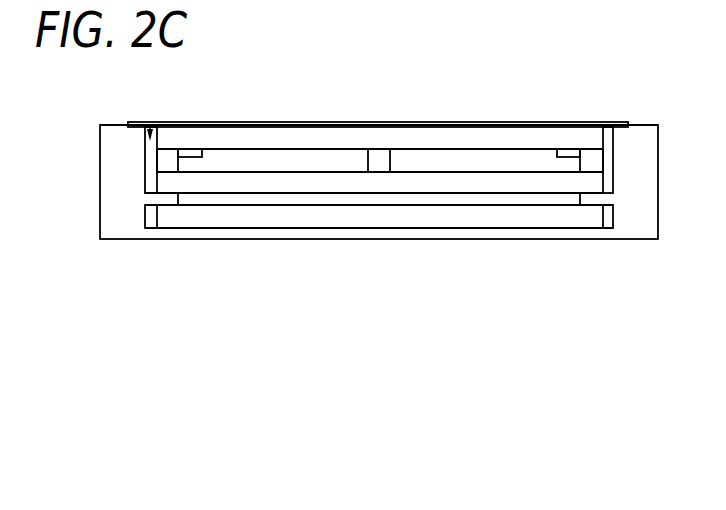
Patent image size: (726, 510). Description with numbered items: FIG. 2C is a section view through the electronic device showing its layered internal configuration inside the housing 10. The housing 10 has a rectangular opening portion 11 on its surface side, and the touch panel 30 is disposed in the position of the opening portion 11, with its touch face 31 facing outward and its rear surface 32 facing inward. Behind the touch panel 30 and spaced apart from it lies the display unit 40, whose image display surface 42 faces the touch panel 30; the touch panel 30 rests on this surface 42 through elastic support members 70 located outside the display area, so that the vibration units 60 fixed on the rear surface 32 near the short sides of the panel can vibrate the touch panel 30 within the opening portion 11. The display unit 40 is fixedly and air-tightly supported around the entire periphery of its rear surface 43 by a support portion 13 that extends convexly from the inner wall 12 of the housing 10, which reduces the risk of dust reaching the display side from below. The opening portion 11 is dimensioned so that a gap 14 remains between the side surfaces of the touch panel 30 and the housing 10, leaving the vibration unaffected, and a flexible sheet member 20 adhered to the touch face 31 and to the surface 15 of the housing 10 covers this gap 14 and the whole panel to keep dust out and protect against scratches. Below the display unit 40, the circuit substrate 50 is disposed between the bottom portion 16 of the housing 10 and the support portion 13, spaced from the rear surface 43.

The housing 10 is at (651, 211).
The opening portion 11 is at (150, 129).
The inner wall 12 is at (144, 160).
The support portion 13 is at (168, 200).
The gap 14 is at (607, 133).
The surface of the housing 15 is at (645, 124).
The bottom portion 16 is at (609, 220).
The sheet member 20 is at (622, 122).
The touch panel 30 is at (502, 137).
The touch face 31 is at (272, 133).
The rear surface of the touch panel 32 is at (314, 150).
The display unit 40 is at (425, 186).
The image display surface 42 is at (222, 160).
The rear surface of the display unit 43 is at (267, 196).
The circuit substrate 50 is at (503, 218).
The vibration unit 60 is at (192, 156).
The elastic support member 70 is at (169, 156).